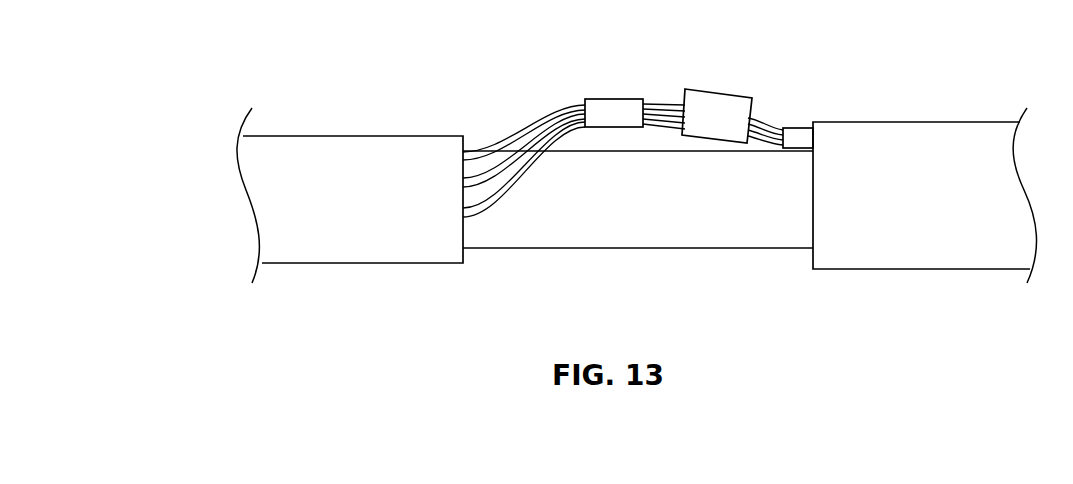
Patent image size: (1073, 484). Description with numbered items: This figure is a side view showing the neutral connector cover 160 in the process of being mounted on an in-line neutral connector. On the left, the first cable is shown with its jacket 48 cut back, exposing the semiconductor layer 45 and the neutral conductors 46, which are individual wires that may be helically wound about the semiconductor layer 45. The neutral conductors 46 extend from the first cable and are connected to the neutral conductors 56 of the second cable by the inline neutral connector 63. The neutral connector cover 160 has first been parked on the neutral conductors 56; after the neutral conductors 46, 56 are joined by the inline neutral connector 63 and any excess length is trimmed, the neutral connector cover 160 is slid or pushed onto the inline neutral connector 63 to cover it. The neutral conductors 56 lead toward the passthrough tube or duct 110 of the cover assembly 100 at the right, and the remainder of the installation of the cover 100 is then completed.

The semiconductor layer 45 is at (573, 235).
The neutral conductors 46 is at (492, 143).
The jacket 48 is at (350, 148).
The neutral conductors 56 is at (667, 102).
The inline neutral connector 63 is at (613, 108).
The cover assembly 100 is at (925, 118).
The passthrough tube or duct 110 is at (798, 126).
The neutral connector cover 160 is at (708, 102).